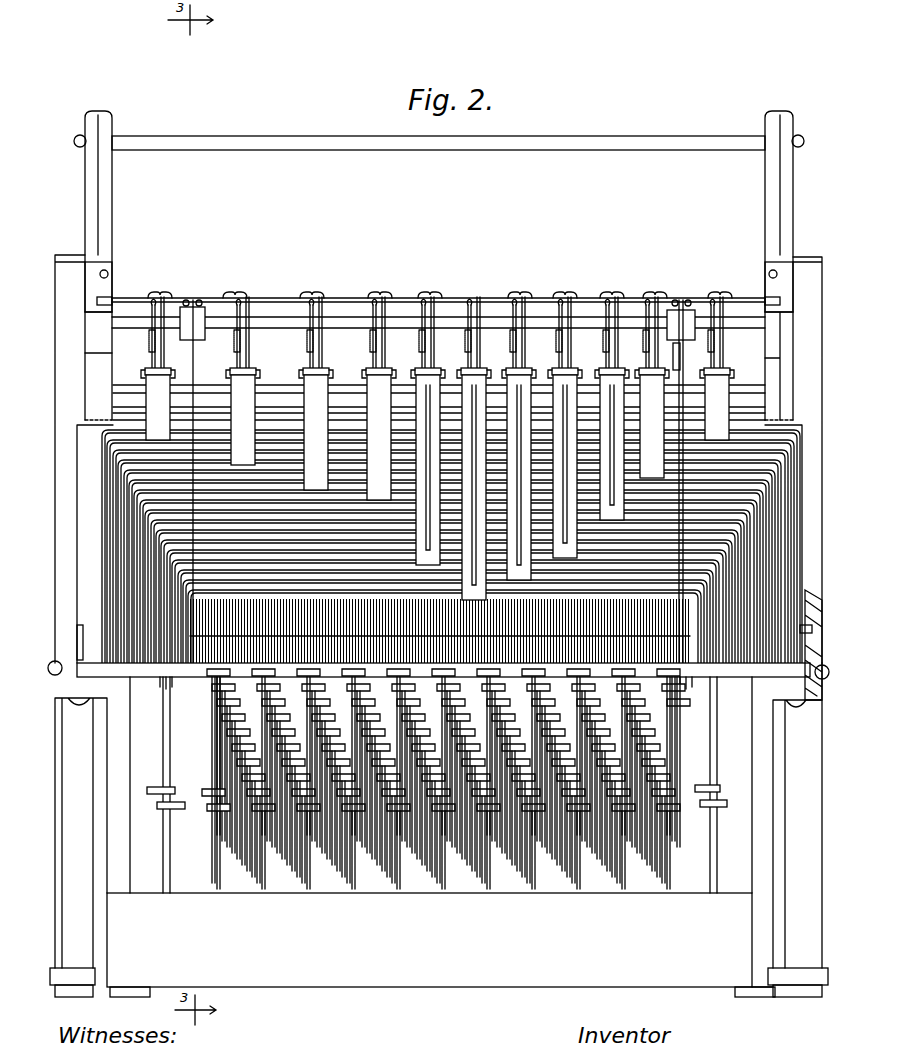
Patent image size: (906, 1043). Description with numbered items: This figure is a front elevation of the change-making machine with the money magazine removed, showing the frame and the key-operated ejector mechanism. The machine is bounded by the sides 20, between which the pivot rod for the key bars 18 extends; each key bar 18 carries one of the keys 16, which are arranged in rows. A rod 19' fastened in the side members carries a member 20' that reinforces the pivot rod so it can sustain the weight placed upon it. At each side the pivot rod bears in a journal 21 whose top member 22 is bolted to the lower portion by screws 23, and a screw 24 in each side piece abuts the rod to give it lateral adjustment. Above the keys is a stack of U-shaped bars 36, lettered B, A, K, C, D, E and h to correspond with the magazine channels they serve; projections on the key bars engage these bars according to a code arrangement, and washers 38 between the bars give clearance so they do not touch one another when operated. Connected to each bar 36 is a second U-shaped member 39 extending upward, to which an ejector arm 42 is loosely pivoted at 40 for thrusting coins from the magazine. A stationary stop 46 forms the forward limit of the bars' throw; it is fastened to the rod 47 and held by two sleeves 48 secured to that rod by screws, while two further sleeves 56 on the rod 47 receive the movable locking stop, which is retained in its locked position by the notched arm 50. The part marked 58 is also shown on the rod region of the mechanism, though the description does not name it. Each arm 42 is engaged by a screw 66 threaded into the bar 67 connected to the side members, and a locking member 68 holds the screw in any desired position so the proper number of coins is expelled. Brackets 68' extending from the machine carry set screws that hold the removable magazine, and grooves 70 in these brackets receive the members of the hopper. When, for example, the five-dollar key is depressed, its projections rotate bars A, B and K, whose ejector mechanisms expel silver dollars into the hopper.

The keys 16 is at (160, 800).
The key bar 18 is at (200, 850).
The rod 19' is at (443, 683).
The sides 20 is at (438, 459).
The member 20' is at (440, 617).
The journal 21 is at (812, 630).
The top member 22 is at (815, 595).
The screws 23 is at (79, 705).
The screw 24 is at (52, 660).
The U-shaped bars 36 is at (305, 548).
The washers 38 is at (166, 690).
The second U-shaped member 39 is at (437, 492).
The pivot 40 is at (141, 373).
The arm 42 is at (420, 347).
The stationary stop 46 is at (193, 345).
The rod 47 is at (445, 322).
The sleeves 48 is at (192, 306).
The arm 50 is at (682, 352).
The sleeves 56 is at (678, 306).
The pin 58 is at (382, 298).
The screw 66 is at (372, 345).
The bar 67 is at (505, 300).
The locking member 68 is at (440, 283).
The brackets 68' is at (439, 283).
The grooves 70 is at (110, 302).
The U-shaped bar B is at (800, 432).
The U-shaped bar A is at (790, 445).
The U-shaped bar K is at (770, 460).
The U-shaped bar C is at (760, 480).
The U-shaped bar D is at (750, 500).
The U-shaped bar E is at (735, 520).
The U-shaped bar H h is at (720, 545).